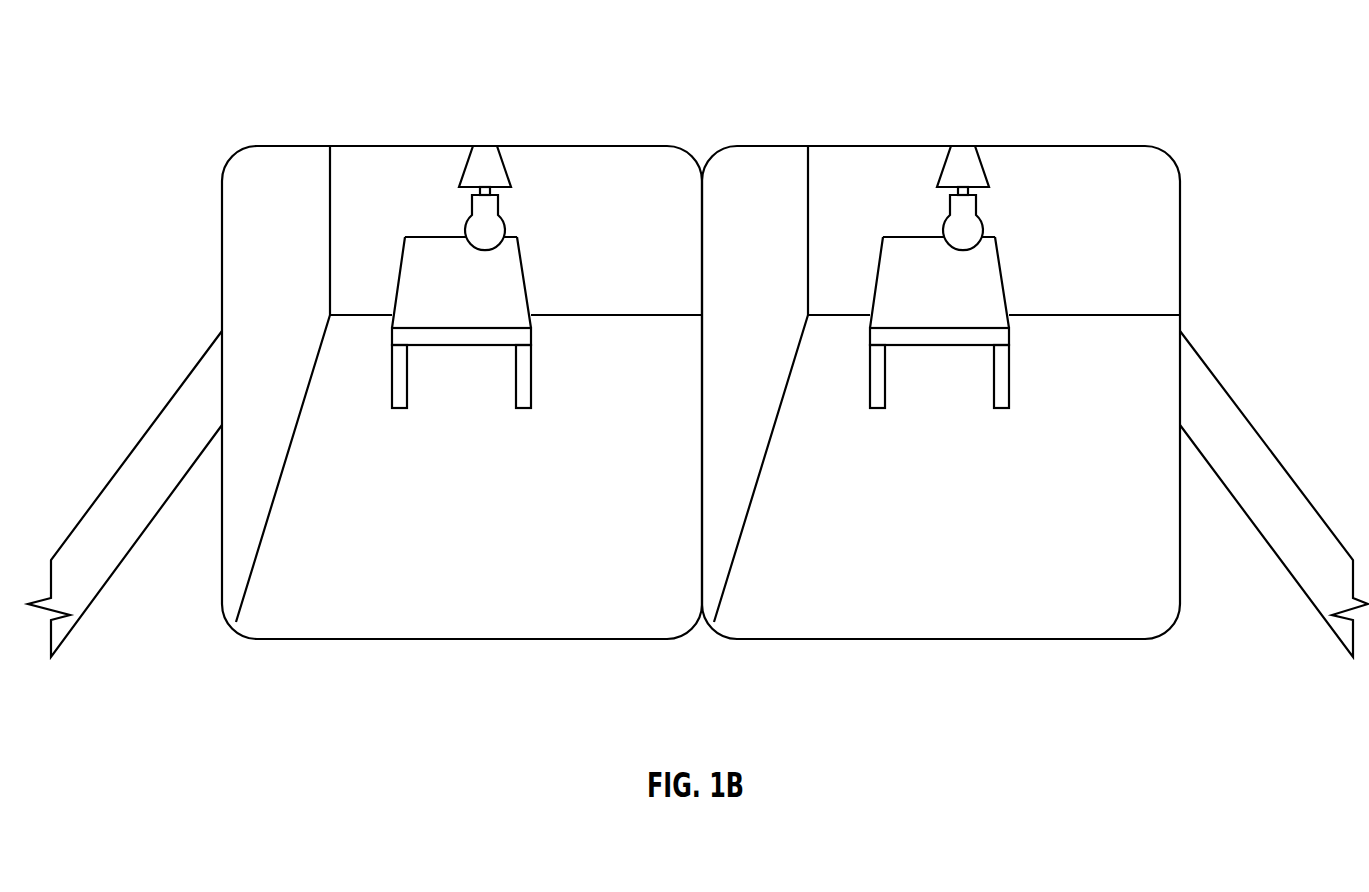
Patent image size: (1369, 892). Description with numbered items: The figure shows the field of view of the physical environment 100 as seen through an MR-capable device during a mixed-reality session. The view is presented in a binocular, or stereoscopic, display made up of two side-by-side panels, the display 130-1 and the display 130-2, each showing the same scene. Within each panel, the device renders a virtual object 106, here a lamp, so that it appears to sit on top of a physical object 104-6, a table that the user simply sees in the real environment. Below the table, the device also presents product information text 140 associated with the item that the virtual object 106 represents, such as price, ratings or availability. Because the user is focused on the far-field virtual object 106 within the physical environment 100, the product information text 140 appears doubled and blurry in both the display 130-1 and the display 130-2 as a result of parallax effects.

The physical environment 100 is at (124, 97).
The display 130-1 is at (298, 143).
The display 130-2 is at (1125, 146).
The virtual object 106 is at (485, 152).
The physical object 104-6 is at (508, 290).
The product information text 140 is at (593, 452).